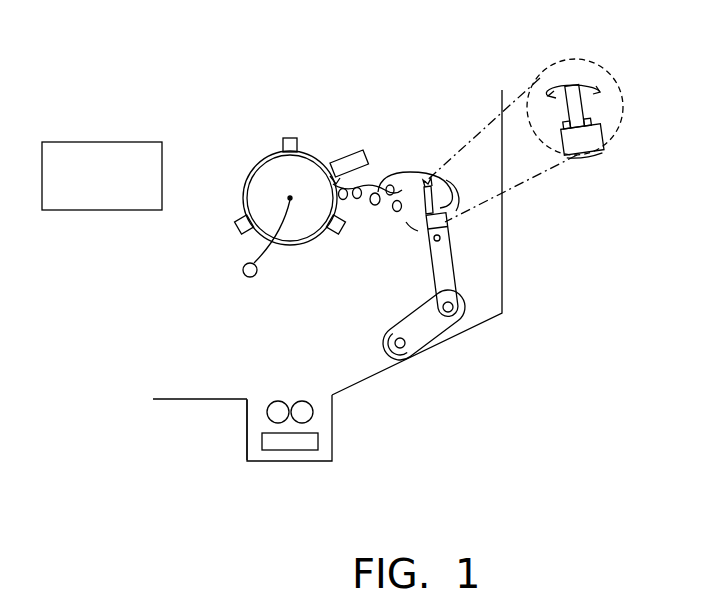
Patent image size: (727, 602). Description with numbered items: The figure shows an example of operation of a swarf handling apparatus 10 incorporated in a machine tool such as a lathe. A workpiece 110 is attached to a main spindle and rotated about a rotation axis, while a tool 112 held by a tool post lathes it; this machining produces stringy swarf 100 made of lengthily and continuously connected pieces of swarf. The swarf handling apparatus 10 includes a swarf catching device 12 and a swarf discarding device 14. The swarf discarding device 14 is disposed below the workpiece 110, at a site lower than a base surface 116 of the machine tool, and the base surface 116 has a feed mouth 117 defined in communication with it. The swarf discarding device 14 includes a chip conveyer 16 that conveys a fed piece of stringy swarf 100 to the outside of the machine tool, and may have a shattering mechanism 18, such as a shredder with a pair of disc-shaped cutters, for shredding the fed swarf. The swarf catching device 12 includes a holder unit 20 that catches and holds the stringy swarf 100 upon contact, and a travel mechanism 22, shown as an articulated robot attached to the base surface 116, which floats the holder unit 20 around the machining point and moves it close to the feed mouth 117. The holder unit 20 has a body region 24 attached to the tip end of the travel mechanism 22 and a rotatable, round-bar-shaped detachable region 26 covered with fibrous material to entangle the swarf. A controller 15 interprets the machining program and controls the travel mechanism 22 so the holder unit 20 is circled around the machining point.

The swarf handling apparatus 10 is at (417, 125).
The swarf catching device 12 is at (472, 262).
The swarf discarding device 14 is at (325, 426).
The controller 15 is at (72, 141).
The chip conveyer 16 is at (288, 448).
The shattering mechanism 18 is at (282, 408).
The holder unit 20 is at (442, 214).
The travel mechanism 22 is at (458, 288).
The body region 24 is at (597, 140).
The detachable region 26 is at (583, 102).
The stringy swarf 100 is at (375, 205).
The workpiece 110 is at (263, 176).
The tool 112 is at (352, 152).
The base surface 116 is at (197, 398).
The feed mouth 117 is at (258, 408).